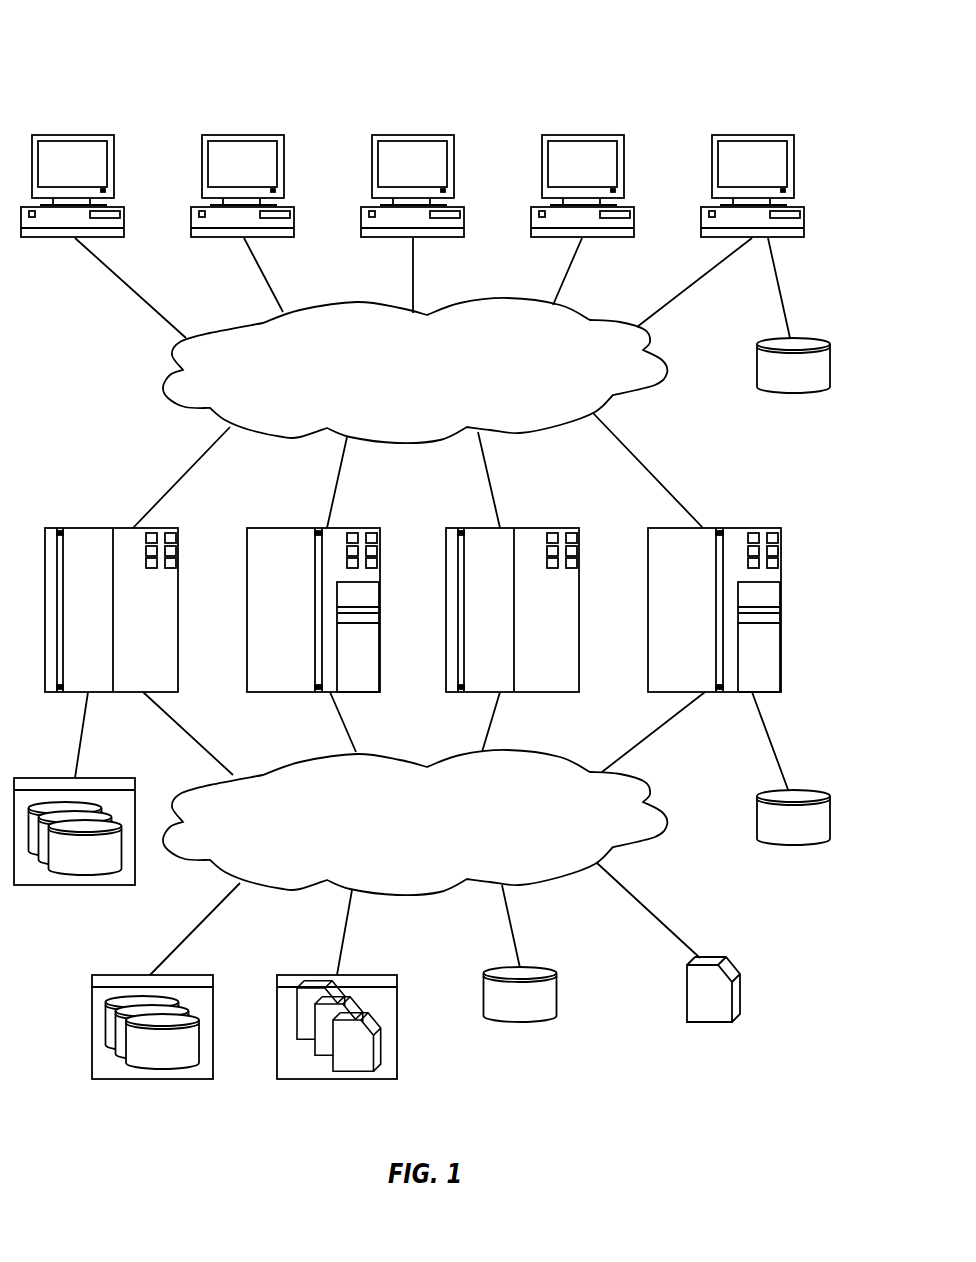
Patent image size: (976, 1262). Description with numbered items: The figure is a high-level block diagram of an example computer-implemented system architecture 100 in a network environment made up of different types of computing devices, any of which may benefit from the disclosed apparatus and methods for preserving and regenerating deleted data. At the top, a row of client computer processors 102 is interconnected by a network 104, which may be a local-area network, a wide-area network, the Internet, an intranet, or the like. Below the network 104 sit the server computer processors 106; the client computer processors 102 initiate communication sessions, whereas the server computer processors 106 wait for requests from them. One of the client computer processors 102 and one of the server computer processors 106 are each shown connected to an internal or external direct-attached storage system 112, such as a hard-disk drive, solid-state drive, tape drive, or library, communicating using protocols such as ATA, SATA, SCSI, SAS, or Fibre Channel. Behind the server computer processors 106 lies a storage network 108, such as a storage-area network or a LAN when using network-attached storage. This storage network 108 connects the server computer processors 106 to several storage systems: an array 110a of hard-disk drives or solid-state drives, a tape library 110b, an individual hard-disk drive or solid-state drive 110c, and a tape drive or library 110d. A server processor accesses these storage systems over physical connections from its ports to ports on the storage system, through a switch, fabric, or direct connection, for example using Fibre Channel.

The system architecture 100 is at (125, 46).
The client computer processor 102 is at (773, 176).
The network 104 is at (433, 400).
The server computer processor 106 is at (700, 619).
The storage network 108 is at (433, 852).
The array 110a is at (150, 1080).
The tape library 110b is at (337, 1080).
The individual hard-disk drive or solid-state drive 110c is at (520, 1023).
The tape drive or library 110d is at (707, 1023).
The direct-attached storage system 112 is at (55, 903).